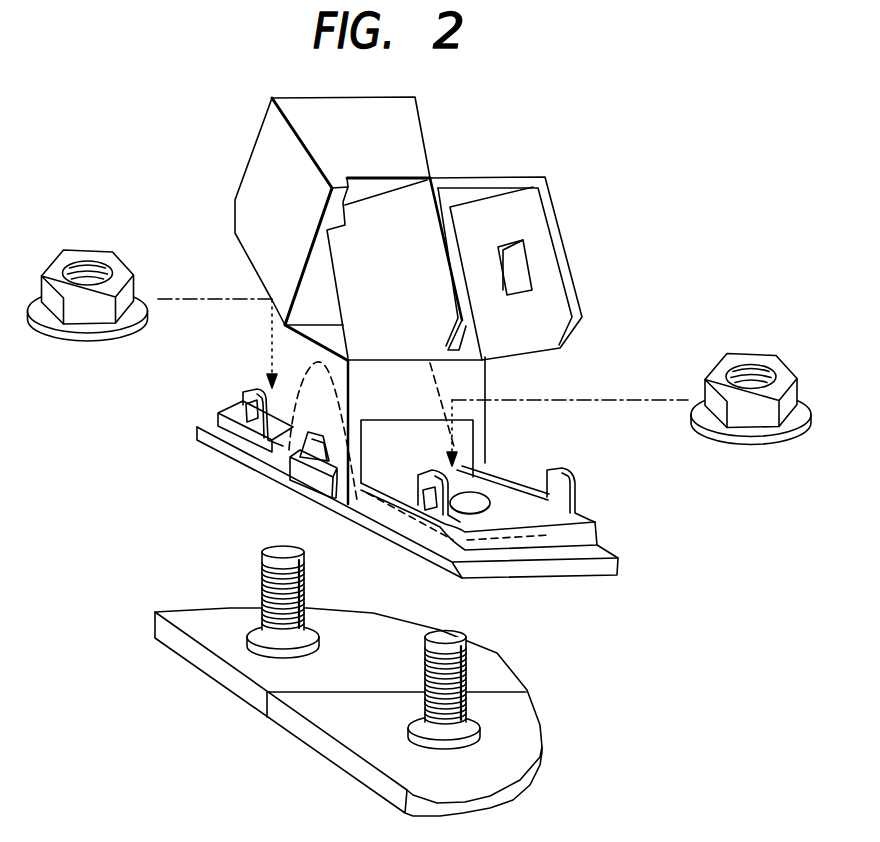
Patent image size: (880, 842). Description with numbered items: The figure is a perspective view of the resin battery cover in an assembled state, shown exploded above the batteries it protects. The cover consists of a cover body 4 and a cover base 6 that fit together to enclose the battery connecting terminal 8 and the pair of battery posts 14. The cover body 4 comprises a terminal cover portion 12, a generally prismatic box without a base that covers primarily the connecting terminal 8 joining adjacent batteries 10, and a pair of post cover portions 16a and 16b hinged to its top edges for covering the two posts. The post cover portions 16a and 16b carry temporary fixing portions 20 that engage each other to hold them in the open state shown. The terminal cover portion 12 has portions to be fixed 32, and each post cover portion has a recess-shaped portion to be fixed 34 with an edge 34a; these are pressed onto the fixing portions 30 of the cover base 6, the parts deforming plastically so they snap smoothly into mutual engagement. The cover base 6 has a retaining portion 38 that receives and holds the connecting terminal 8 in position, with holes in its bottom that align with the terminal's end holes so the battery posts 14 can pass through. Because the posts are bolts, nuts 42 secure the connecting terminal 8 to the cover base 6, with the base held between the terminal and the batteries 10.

The cover body 4 is at (401, 217).
The cover base 6 is at (421, 506).
The battery connecting terminal 8 is at (453, 445).
The battery 10 is at (223, 645).
The terminal cover portion 12 is at (487, 378).
The battery post 14 is at (262, 562).
The post cover portion 16a is at (557, 215).
The post cover portion 16b is at (250, 163).
The temporary fixing portion 20 is at (422, 166).
The fixing portion 30 is at (300, 472).
The portion to be fixed 32 is at (312, 486).
The portion to be fixed 34 is at (505, 275).
The edge 34a is at (501, 247).
The retaining portion 38 is at (554, 513).
The nut 42 is at (420, 340).